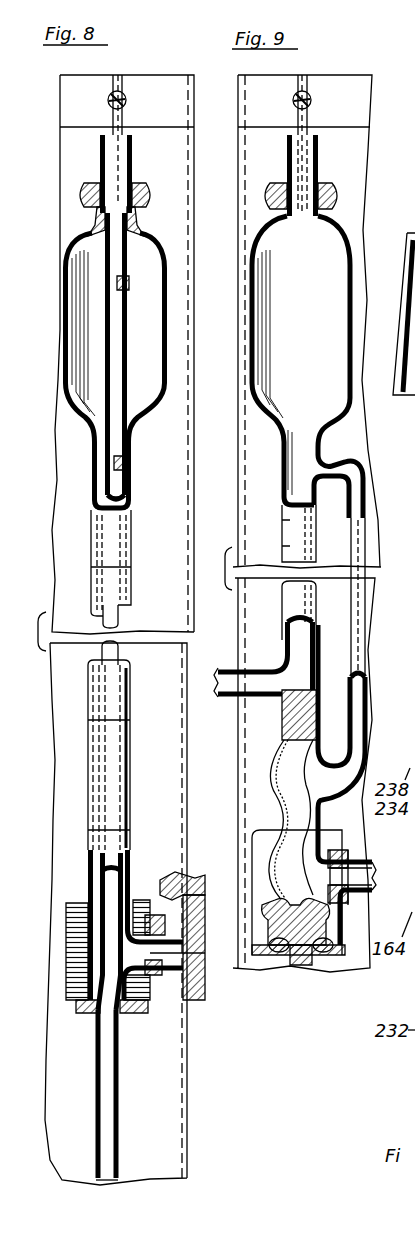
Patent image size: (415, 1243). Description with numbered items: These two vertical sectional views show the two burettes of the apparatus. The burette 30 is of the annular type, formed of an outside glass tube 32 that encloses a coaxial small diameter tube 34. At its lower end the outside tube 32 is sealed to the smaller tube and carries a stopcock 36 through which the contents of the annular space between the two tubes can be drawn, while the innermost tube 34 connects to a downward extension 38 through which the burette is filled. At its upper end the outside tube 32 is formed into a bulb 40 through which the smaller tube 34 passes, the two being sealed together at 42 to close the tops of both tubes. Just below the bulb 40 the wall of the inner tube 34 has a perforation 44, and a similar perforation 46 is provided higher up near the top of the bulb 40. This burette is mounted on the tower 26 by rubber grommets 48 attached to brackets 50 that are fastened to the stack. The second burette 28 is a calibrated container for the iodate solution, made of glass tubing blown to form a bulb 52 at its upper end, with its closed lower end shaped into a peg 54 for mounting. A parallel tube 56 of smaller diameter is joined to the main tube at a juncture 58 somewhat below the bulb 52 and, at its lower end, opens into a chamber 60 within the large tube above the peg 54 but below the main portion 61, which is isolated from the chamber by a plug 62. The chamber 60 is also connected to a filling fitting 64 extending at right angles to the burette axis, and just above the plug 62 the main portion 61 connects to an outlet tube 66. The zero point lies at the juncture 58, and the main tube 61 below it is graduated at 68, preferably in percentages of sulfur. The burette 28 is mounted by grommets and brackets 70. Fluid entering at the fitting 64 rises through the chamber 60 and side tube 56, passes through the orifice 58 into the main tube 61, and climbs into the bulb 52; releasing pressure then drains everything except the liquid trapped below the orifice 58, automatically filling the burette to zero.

In FIG. 8, the tower 26 is at (68, 547).
In FIG. 9, the tower 26 is at (352, 433).
In FIG. 9, the burette 28 is at (263, 482).
In FIG. 8, the burette 30 is at (77, 742).
In FIG. 8, the outside glass tube 32 is at (132, 540).
In FIG. 8, the small diameter tube 34 is at (124, 381).
In FIG. 8, the stopcock 36 is at (178, 930).
In FIG. 8, the downward extension 38 is at (95, 1070).
In FIG. 8, the bulb 40 is at (68, 331).
In FIG. 8, the seal 42 is at (96, 218).
In FIG. 8, the perforation 44 is at (129, 461).
In FIG. 8, the perforation 46 is at (124, 288).
In FIG. 8, the rubber grommets 48 is at (97, 186).
In FIG. 8, the brackets 50 is at (142, 193).
In FIG. 9, the bulb 52 is at (252, 267).
In FIG. 9, the peg 54 is at (286, 968).
In FIG. 9, the parallel tube 56 is at (362, 533).
In FIG. 9, the juncture 58 is at (322, 474).
In FIG. 9, the chamber 60 is at (288, 786).
In FIG. 9, the main portion 61 is at (285, 548).
In FIG. 9, the plug 62 is at (282, 714).
In FIG. 9, the filling fitting 64 is at (352, 870).
In FIG. 9, the outlet tube 66 is at (228, 668).
In FIG. 9, the graduations 68 is at (284, 522).
In FIG. 9, the grommets and brackets 70 is at (350, 186).